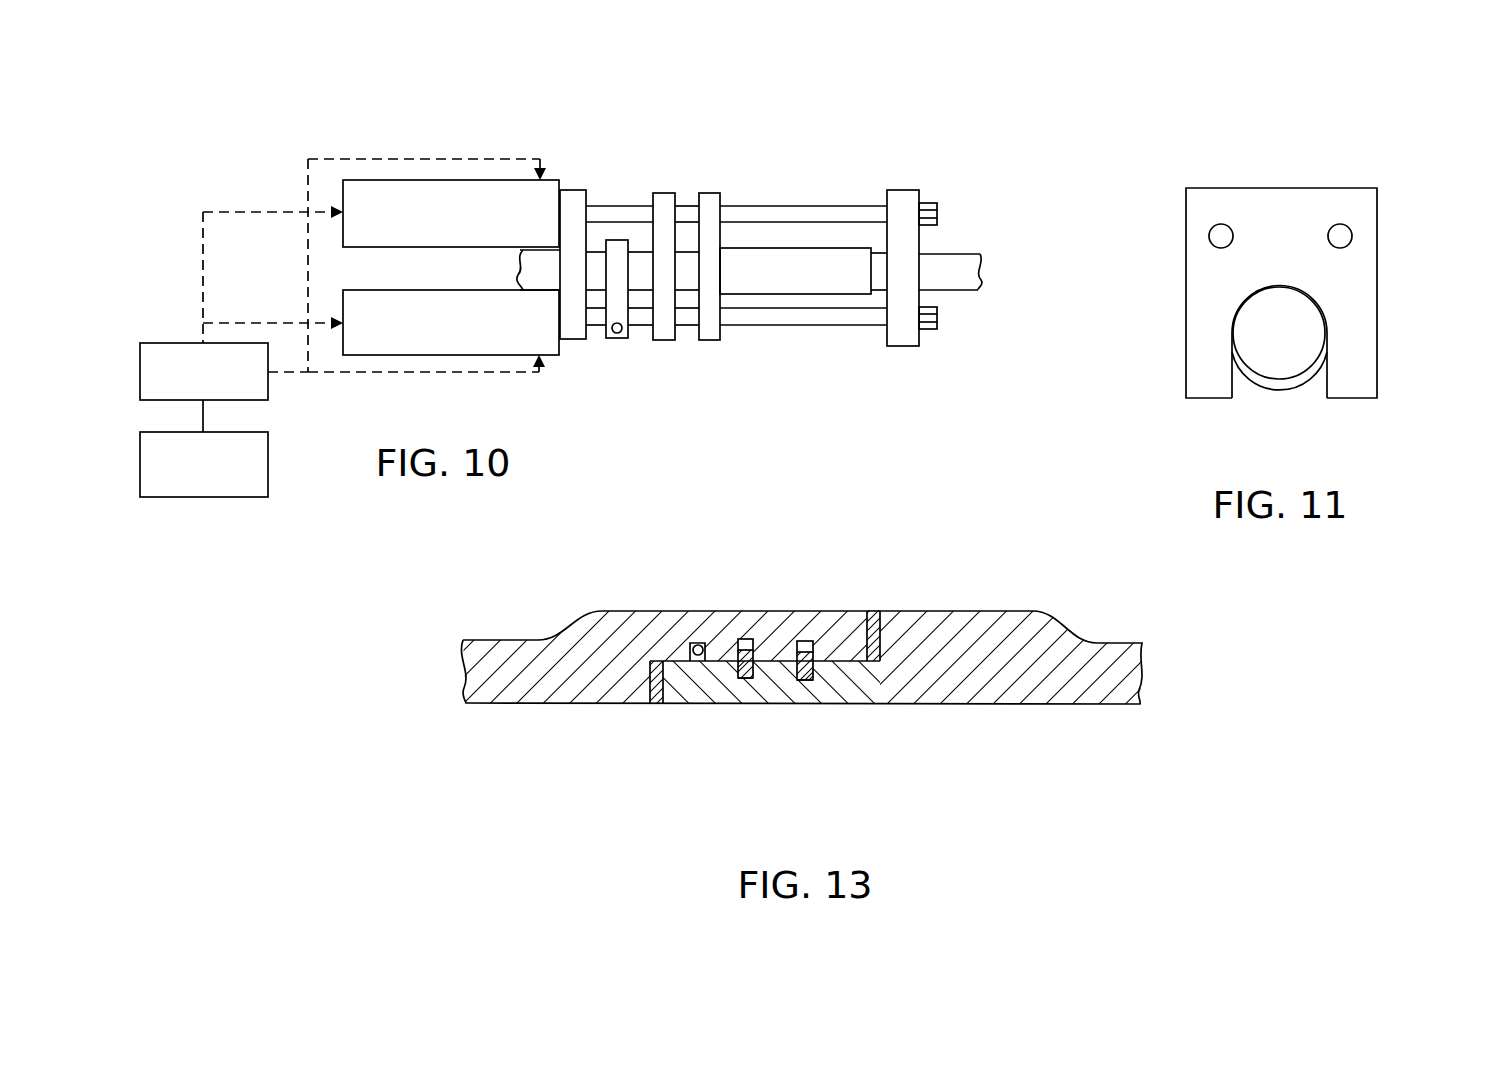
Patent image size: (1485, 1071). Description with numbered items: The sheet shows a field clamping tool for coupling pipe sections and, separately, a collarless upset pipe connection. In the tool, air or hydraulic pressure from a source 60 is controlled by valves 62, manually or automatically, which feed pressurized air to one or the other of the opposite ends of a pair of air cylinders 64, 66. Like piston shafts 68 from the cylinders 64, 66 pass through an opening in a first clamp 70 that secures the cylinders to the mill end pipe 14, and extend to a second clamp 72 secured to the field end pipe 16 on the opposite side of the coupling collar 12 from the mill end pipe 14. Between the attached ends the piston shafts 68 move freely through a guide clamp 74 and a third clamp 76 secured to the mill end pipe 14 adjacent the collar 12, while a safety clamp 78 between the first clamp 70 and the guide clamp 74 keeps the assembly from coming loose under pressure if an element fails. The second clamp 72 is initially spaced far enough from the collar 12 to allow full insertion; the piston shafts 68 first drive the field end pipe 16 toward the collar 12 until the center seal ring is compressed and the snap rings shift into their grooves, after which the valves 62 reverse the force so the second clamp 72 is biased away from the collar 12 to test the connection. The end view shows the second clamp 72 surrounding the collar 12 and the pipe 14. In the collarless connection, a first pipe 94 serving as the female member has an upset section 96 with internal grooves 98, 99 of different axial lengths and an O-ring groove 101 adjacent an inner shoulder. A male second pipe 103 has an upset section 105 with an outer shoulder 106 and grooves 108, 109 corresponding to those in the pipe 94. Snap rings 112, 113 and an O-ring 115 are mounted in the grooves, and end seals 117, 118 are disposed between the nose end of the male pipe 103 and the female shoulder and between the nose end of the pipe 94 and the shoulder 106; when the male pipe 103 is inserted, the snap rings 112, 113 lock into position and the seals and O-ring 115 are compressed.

In FIG. 10, the coupling collar 12 is at (790, 297).
In FIG. 11, the coupling collar 12 is at (1303, 392).
In FIG. 10, the mill end pipe 14 is at (597, 250).
In FIG. 11, the mill end pipe 14 is at (1257, 378).
In FIG. 10, the field end pipe 16 is at (972, 254).
In FIG. 10, the source 60 is at (202, 498).
In FIG. 10, the valves 62 is at (170, 343).
In FIG. 10, the air cylinder 64 is at (420, 180).
In FIG. 10, the air cylinder 66 is at (426, 356).
In FIG. 10, the piston shafts 68 is at (823, 207).
In FIG. 10, the first clamp 70 is at (572, 190).
In FIG. 10, the second clamp 72 is at (905, 346).
In FIG. 11, the second clamp 72 is at (1377, 228).
In FIG. 10, the guide clamp 74 is at (665, 193).
In FIG. 10, the third clamp 76 is at (708, 193).
In FIG. 10, the safety clamp 78 is at (615, 339).
In FIG. 13, the first pipe 94 is at (520, 640).
In FIG. 13, the upset section 96 is at (622, 611).
In FIG. 13, the internal groove 98 is at (747, 638).
In FIG. 13, the internal groove 99 is at (803, 642).
In FIG. 13, the O-ring groove 101 is at (708, 647).
In FIG. 13, the second pipe 103 is at (1117, 643).
In FIG. 13, the upset section 105 is at (972, 612).
In FIG. 13, the outer shoulder 106 is at (882, 645).
In FIG. 13, the groove 108 is at (738, 678).
In FIG. 13, the groove 109 is at (803, 670).
In FIG. 13, the snap ring 112 is at (745, 672).
In FIG. 13, the snap ring 113 is at (802, 673).
In FIG. 13, the O-ring 115 is at (697, 647).
In FIG. 13, the end seal 117 is at (655, 693).
In FIG. 13, the end seal 118 is at (873, 662).